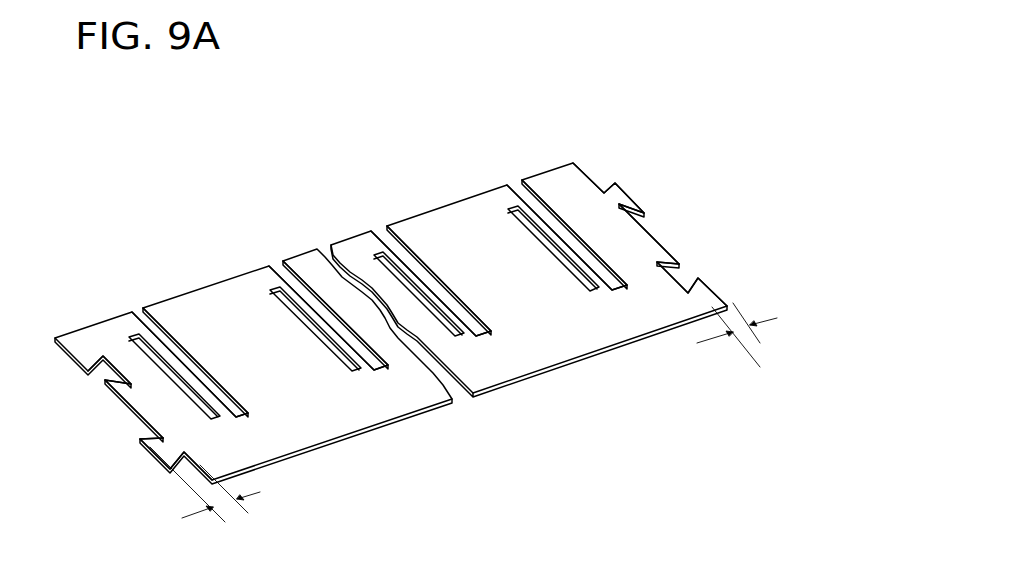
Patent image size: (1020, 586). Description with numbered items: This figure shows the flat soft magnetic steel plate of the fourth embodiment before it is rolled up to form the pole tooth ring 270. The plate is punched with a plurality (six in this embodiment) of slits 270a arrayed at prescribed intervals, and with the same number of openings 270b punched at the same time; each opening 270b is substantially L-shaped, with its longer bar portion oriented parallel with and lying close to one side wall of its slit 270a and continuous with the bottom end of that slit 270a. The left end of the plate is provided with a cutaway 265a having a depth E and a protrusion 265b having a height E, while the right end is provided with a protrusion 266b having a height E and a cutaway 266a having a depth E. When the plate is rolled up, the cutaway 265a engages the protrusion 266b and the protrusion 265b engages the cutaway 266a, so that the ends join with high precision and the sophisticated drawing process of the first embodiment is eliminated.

The pole tooth ring 270 is at (371, 160).
The slit 270a is at (138, 318).
The opening 270b is at (204, 411).
The cutaway 265a is at (103, 375).
The protrusion 265b is at (160, 441).
The cutaway 266a is at (686, 277).
The protrusion 266b is at (638, 194).
The depth/height E is at (228, 507).